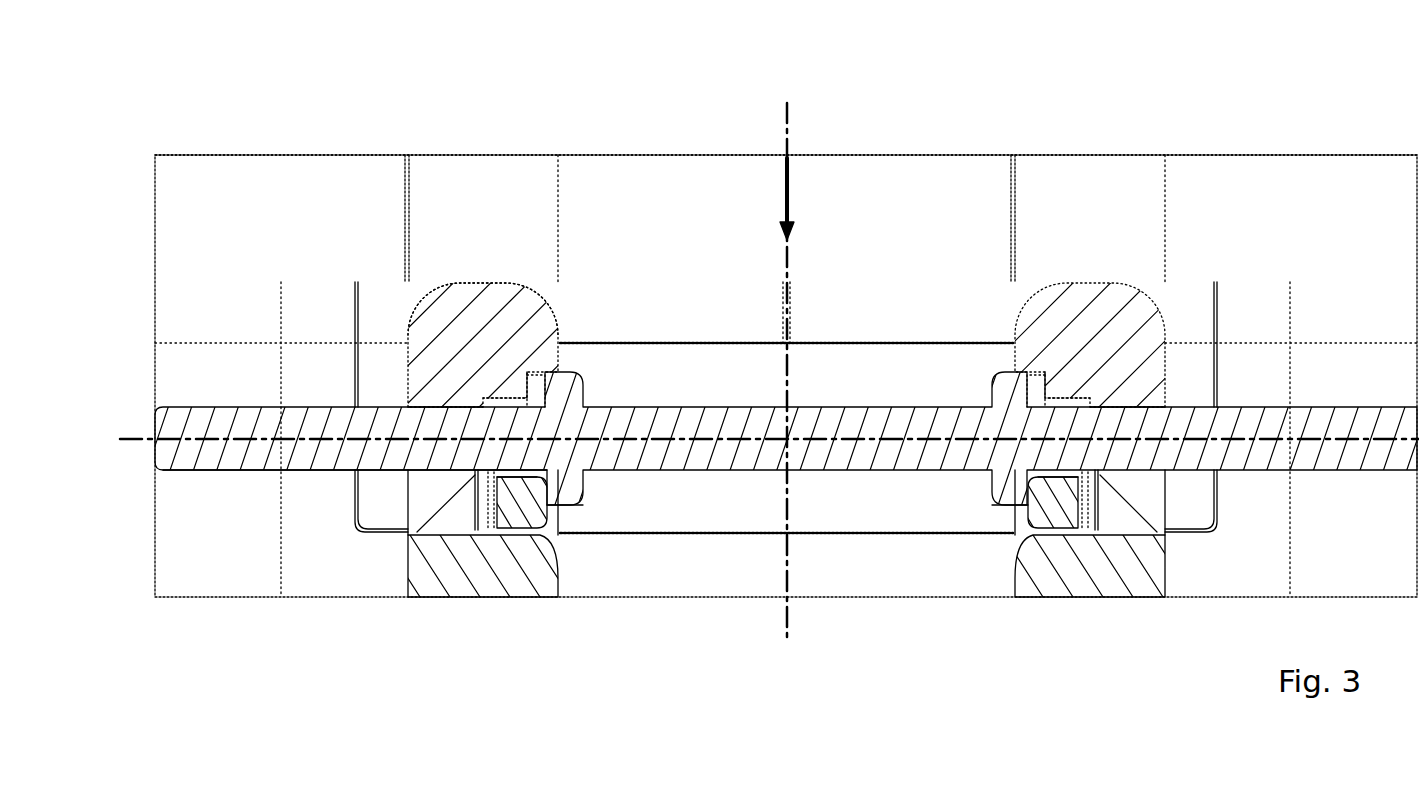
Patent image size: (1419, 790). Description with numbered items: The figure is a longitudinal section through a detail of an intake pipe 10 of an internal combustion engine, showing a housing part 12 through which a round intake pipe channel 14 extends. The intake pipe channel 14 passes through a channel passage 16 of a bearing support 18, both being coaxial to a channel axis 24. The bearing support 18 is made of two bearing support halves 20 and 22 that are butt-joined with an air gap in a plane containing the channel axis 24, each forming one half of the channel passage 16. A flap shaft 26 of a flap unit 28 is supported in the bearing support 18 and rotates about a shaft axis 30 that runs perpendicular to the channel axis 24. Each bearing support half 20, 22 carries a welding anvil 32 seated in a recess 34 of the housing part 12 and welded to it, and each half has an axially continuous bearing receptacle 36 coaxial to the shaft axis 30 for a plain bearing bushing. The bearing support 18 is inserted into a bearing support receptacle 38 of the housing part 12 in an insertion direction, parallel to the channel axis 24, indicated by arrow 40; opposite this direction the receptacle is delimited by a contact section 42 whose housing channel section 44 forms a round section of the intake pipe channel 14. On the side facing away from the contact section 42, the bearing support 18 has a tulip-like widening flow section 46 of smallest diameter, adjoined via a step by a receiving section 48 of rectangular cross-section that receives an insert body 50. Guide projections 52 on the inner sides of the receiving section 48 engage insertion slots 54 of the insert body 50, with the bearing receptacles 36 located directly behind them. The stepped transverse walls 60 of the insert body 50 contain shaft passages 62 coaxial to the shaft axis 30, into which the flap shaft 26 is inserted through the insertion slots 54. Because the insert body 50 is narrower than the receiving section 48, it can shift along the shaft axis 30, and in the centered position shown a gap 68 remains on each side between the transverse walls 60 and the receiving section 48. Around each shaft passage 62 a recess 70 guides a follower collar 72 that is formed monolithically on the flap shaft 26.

The intake pipe 10 is at (273, 103).
The housing part 12 is at (236, 160).
The intake pipe channel 14 is at (722, 508).
The channel passage 16 is at (757, 320).
The bearing support 18 is at (513, 298).
The bearing support half 20 is at (483, 290).
The bearing support half 22 is at (1130, 327).
The channel axis 24 is at (783, 147).
The flap shaft 26 is at (218, 417).
The flap unit 28 is at (238, 475).
The shaft axis 30 is at (259, 435).
The welding anvil 32 is at (517, 195).
The recess 34 is at (405, 158).
The bearing receptacle 36 is at (418, 405).
The bearing support receptacle 38 is at (410, 535).
The arrow 40 is at (783, 195).
The contact section 42 is at (508, 578).
The housing channel section 44 is at (898, 580).
The flow section 46 is at (828, 297).
The receiving section 48 is at (418, 505).
The insert body 50 is at (535, 520).
The guide projection 52 is at (515, 385).
The insertion slot 54 is at (540, 385).
The transverse wall 60 is at (482, 485).
The shaft passage 62 is at (520, 470).
The gap 68 is at (485, 514).
The recess 70 is at (560, 503).
The follower collar 72 is at (560, 385).